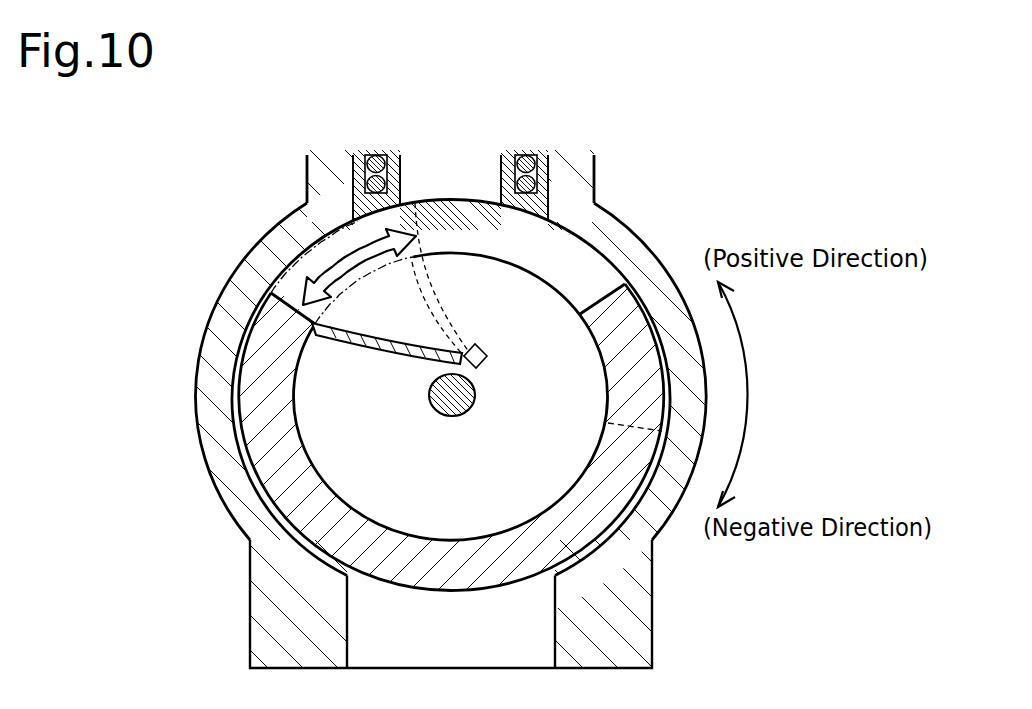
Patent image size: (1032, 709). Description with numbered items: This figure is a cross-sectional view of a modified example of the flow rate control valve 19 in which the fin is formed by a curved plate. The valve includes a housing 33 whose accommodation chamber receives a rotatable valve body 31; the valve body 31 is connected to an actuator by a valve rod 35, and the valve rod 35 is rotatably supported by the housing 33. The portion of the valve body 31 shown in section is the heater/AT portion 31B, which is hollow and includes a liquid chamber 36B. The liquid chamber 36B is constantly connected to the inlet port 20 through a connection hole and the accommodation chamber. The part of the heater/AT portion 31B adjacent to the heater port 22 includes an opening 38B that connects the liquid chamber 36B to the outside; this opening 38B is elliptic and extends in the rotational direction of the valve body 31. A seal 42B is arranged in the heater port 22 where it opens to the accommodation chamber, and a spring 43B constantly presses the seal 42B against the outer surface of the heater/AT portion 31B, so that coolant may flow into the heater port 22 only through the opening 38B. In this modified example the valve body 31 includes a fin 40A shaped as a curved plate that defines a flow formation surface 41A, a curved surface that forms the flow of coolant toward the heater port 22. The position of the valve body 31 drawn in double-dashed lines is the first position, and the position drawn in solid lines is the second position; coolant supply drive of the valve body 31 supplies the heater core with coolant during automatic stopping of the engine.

The flow rate control valve 19 is at (150, 236).
The inlet port 20 is at (452, 661).
The heater port 22 is at (484, 166).
The valve body 31 is at (516, 410).
The heater/AT portion 31B is at (453, 593).
The housing 33 is at (216, 455).
The valve rod 35 is at (476, 397).
The liquid chamber 36B is at (451, 396).
The opening 38B is at (484, 237).
The fin 40A is at (482, 352).
The flow formation surface 41A is at (400, 338).
The seal 42B is at (379, 154).
The spring 43B is at (400, 182).